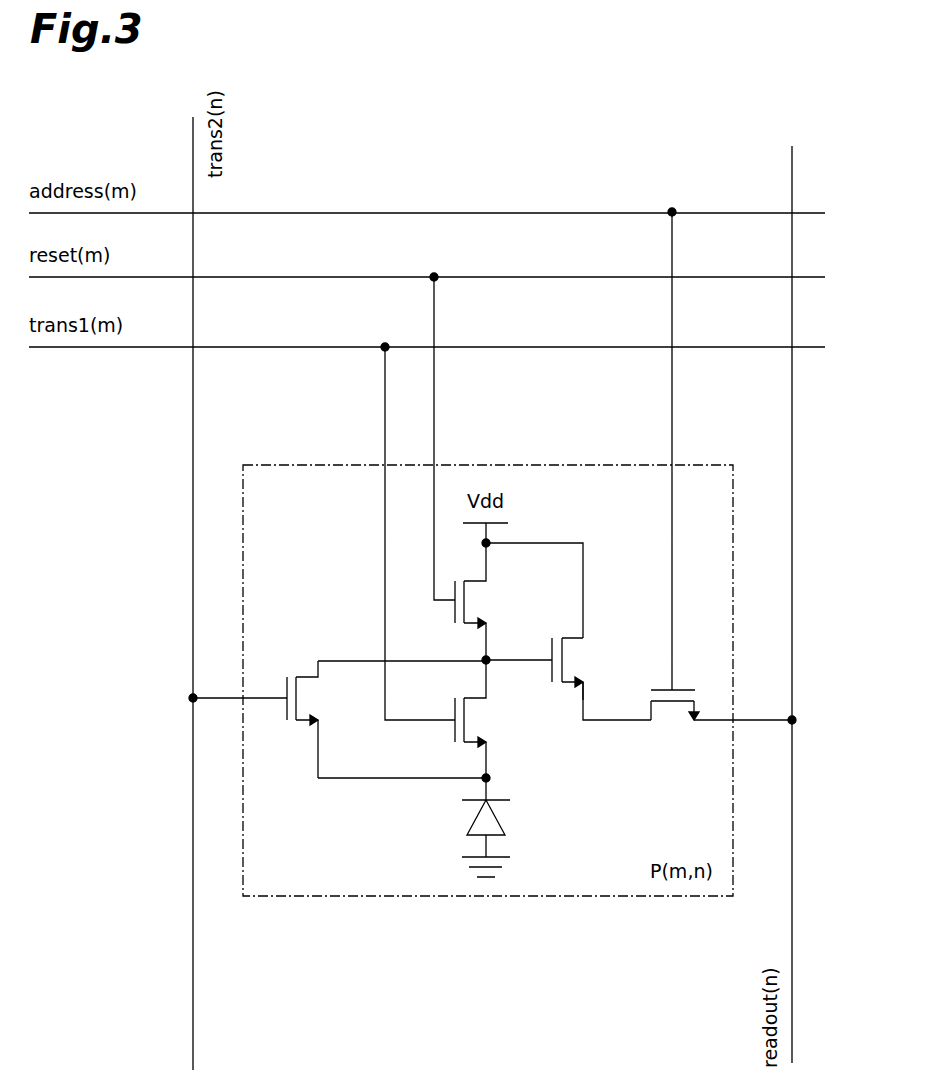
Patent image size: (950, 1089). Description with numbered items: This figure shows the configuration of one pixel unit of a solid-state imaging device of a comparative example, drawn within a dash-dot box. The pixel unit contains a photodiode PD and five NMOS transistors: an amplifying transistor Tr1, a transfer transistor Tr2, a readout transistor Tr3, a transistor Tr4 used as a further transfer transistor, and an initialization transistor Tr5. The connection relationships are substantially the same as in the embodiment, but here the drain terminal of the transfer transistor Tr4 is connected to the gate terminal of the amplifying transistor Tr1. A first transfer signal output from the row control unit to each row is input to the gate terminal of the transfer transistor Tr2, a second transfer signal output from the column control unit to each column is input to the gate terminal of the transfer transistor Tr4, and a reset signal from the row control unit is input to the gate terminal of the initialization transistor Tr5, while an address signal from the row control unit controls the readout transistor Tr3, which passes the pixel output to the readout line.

The amplifying transistor Tr1 is at (584, 669).
The transfer transistor Tr2 is at (488, 719).
The readout transistor Tr3 is at (675, 722).
The transfer transistor Tr4 is at (319, 719).
The initialization transistor Tr5 is at (488, 601).
The photodiode PD is at (501, 827).